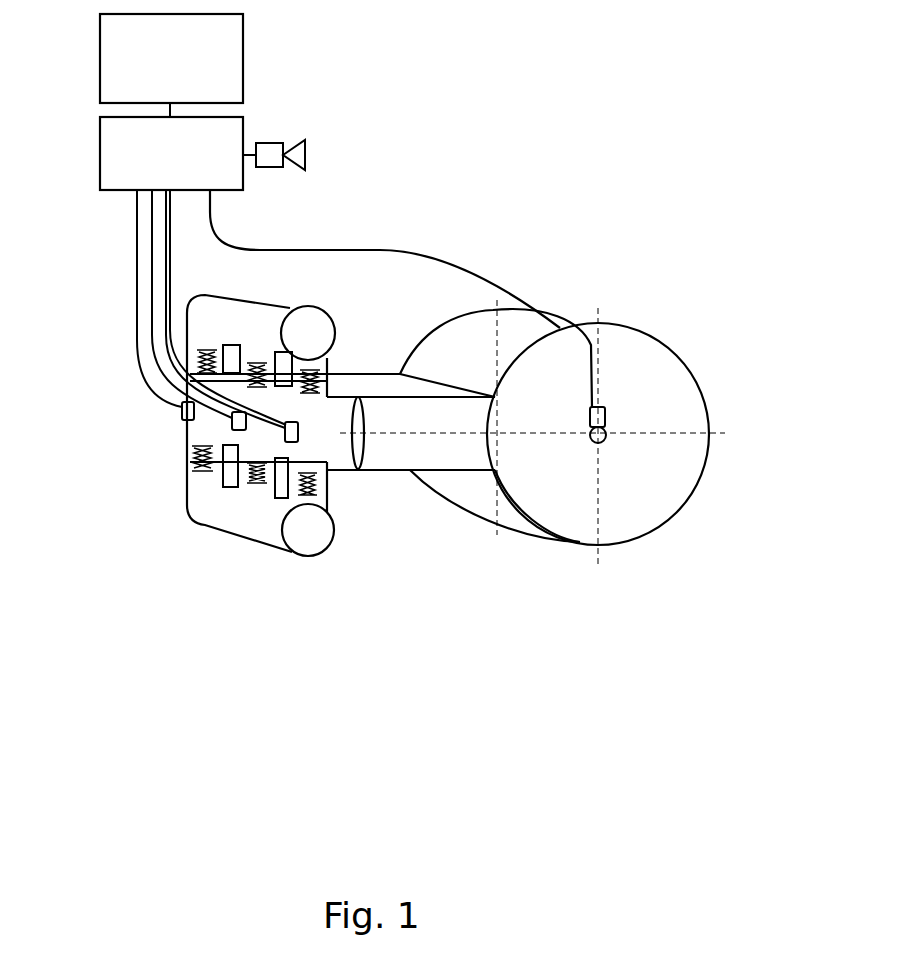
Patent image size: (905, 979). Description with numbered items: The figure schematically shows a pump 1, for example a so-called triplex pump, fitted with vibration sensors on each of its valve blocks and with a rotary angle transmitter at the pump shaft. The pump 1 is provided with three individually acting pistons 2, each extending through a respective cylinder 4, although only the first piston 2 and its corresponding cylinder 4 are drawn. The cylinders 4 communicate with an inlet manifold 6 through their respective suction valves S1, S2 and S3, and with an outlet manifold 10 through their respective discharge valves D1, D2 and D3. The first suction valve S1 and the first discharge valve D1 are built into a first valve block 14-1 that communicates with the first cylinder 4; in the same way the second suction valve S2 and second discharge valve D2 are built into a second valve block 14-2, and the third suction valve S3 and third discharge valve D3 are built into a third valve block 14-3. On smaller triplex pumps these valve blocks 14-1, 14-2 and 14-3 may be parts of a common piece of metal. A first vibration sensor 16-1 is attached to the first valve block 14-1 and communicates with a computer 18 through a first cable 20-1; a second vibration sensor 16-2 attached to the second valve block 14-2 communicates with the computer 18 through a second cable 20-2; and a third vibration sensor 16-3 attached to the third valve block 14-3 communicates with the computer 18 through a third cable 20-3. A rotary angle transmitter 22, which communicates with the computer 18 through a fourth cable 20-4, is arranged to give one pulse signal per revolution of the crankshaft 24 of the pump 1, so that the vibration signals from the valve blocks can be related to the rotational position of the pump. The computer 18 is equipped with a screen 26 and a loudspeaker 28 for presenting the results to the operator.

The pump 1 is at (575, 286).
The piston 2 is at (398, 450).
The cylinder 4 is at (343, 453).
The inlet manifold 6 is at (303, 543).
The outlet manifold 10 is at (185, 308).
The first valve block 14-1 is at (282, 497).
The second valve block 14-2 is at (200, 470).
The third valve block 14-3 is at (185, 432).
The first vibration sensor 16-1 is at (290, 442).
The second vibration sensor 16-2 is at (195, 448).
The third vibration sensor 16-3 is at (180, 412).
The computer 18 is at (225, 133).
The first cable 20-1 is at (148, 243).
The second cable 20-2 is at (160, 270).
The third cable 20-3 is at (137, 291).
The fourth cable 20-4 is at (390, 248).
The rotary angle transmitter 22 is at (607, 413).
The crankshaft 24 is at (607, 433).
The screen 26 is at (223, 68).
The loudspeaker 28 is at (280, 162).
The first discharge valve D1 is at (187, 386).
The second discharge valve D2 is at (187, 362).
The third discharge valve D3 is at (187, 339).
The first suction valve S1 is at (305, 495).
The second suction valve S2 is at (255, 483).
The third suction valve S3 is at (200, 473).